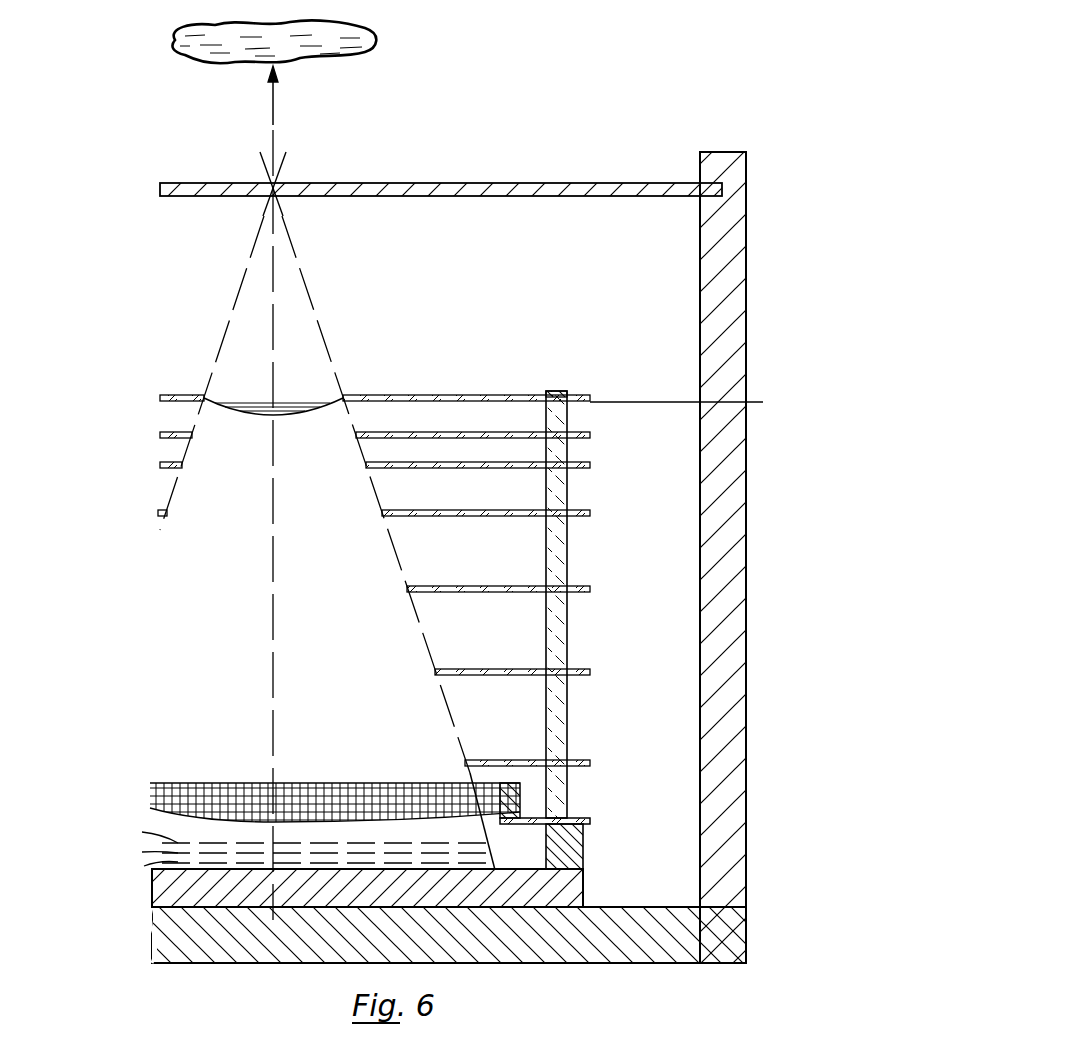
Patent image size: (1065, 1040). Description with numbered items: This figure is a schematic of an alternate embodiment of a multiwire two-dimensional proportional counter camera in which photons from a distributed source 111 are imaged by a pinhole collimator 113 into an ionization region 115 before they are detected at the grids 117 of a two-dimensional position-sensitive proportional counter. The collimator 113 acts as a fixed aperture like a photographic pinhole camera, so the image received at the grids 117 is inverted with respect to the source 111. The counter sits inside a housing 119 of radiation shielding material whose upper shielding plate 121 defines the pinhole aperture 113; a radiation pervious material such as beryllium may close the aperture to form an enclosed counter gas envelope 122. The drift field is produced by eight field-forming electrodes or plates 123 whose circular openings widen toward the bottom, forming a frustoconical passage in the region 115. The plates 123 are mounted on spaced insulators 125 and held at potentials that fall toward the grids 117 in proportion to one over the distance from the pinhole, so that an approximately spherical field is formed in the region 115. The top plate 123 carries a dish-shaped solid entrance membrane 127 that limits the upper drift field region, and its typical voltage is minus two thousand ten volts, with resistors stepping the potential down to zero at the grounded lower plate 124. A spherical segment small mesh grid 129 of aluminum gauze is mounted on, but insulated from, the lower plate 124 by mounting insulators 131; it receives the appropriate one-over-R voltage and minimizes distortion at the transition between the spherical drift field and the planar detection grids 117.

The distributed source 111 is at (286, 58).
The pinhole collimator 113 is at (267, 186).
The ionization region 115 is at (344, 626).
The grids 117 is at (403, 862).
The housing 119 is at (748, 296).
The upper shielding plate 121 is at (438, 183).
The counter gas envelope 122 is at (478, 305).
The field-forming electrodes 123 is at (590, 466).
The lower plate 124 is at (594, 822).
The spaced insulators 125 is at (567, 698).
The dish-shaped solid entrance membrane 127 is at (237, 412).
The spherical segment small mesh grid 129 is at (232, 791).
The mounting insulators 131 is at (518, 800).